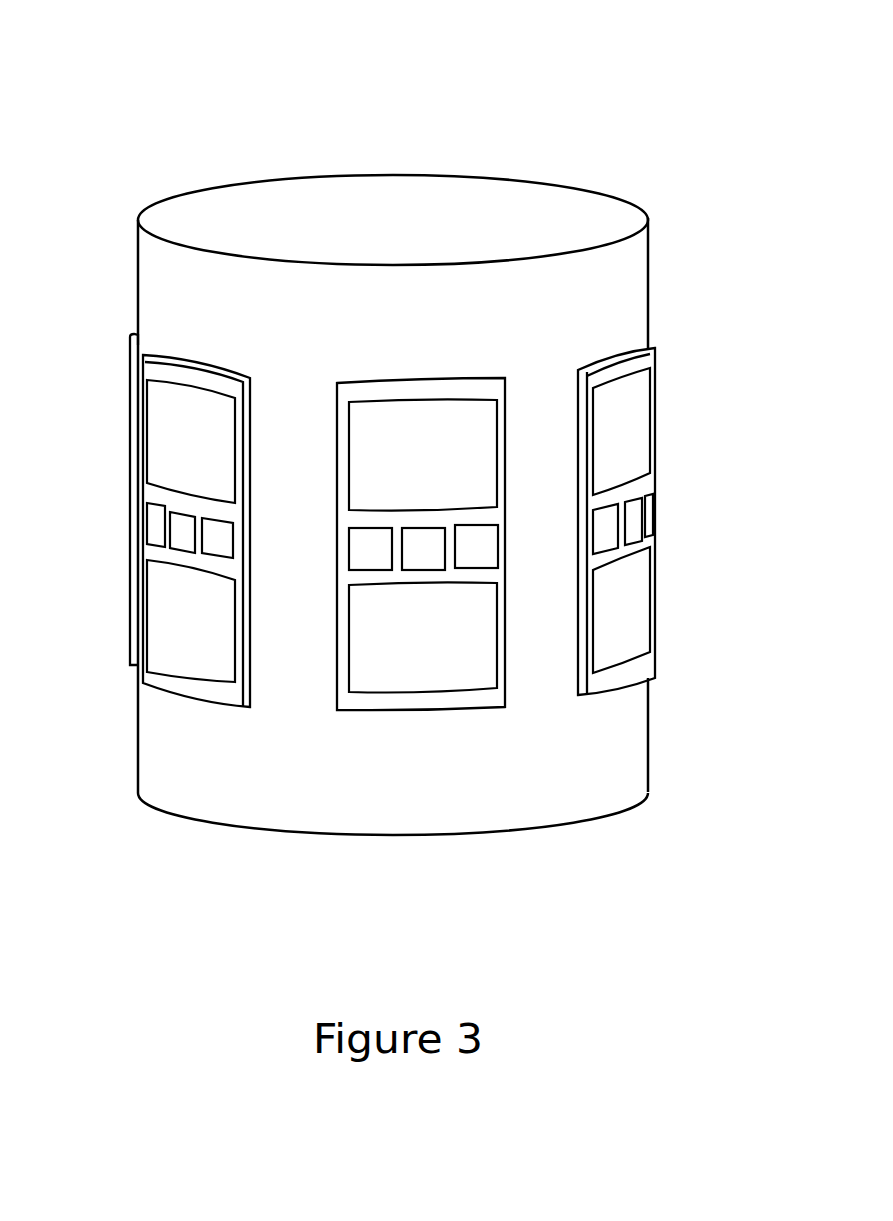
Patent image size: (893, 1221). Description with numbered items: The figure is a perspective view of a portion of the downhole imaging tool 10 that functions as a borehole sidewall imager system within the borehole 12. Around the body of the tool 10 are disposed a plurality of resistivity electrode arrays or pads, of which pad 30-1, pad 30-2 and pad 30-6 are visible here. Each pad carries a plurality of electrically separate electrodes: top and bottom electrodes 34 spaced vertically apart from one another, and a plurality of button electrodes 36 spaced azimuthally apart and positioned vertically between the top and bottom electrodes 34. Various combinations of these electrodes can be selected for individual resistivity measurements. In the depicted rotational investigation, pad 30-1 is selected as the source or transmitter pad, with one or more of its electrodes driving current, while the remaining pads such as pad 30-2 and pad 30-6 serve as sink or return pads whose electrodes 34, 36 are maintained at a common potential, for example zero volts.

The imaging tool 10 is at (529, 40).
The borehole 12 is at (648, 275).
The resistivity array or pad 30-1 is at (407, 383).
The resistivity array or pad 30-2 is at (198, 367).
The resistivity array or pad 30-6 is at (606, 363).
The top and bottom electrodes 34 is at (167, 453).
The button electrodes 36 is at (192, 545).